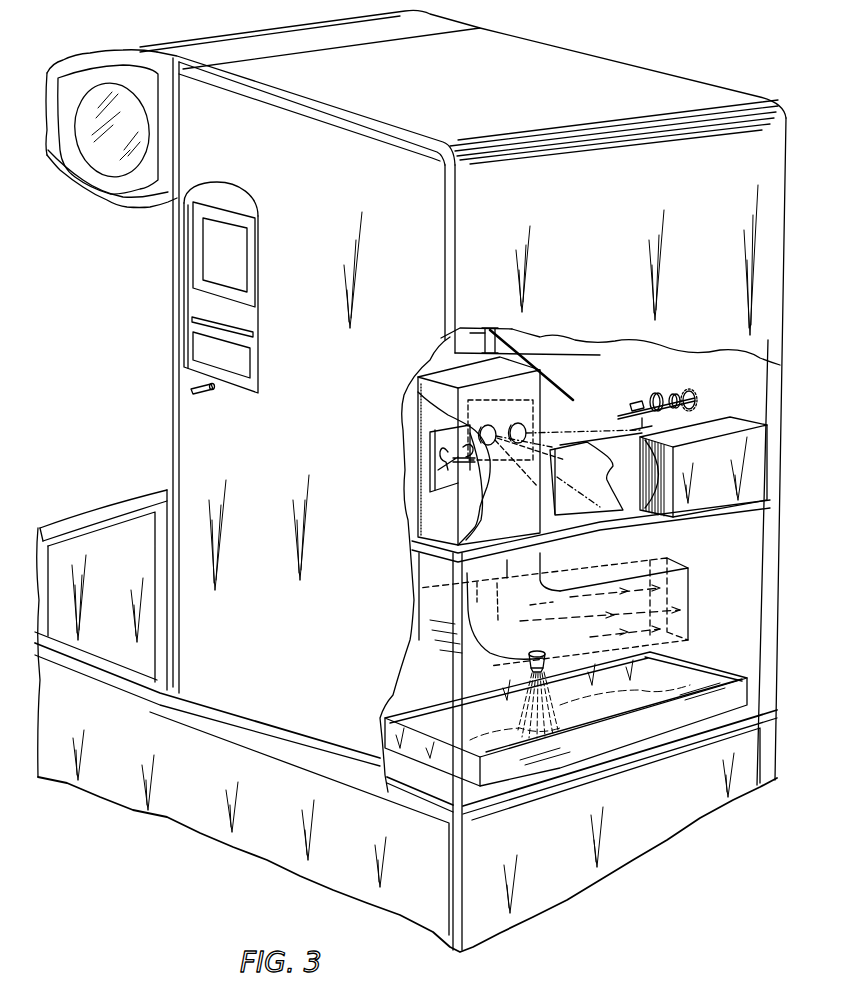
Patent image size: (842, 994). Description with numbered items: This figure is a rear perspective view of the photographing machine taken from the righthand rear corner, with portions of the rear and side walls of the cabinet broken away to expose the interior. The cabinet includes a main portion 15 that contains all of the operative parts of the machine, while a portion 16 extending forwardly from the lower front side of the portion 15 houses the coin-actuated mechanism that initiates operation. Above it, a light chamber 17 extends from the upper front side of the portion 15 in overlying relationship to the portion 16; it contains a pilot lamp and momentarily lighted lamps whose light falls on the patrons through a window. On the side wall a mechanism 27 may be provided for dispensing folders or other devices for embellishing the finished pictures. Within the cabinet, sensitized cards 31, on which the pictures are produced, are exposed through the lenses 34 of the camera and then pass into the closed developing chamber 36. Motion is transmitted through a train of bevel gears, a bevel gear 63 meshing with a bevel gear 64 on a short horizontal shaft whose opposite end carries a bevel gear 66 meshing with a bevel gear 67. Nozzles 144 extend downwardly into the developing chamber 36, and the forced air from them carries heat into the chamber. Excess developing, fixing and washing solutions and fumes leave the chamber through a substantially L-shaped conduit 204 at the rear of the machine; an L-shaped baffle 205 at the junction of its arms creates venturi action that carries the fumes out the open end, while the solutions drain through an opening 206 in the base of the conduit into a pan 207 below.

The cabinet portion 15 is at (618, 442).
The cabinet portion 16 is at (103, 590).
The light chamber 17 is at (73, 84).
The mechanism for dispensing folders 27 is at (203, 298).
The sensitized cards 31 is at (467, 509).
The lenses 34 is at (492, 430).
The developing chamber 36 is at (452, 372).
The bevel gear 63 is at (678, 395).
The bevel gear 64 is at (694, 402).
The bevel gear 66 is at (660, 393).
The bevel gear 67 is at (641, 402).
The nozzles 144 is at (442, 449).
The conduit 204 is at (578, 597).
The baffle 205 is at (600, 615).
The opening 206 is at (530, 671).
The pan 207 is at (710, 678).